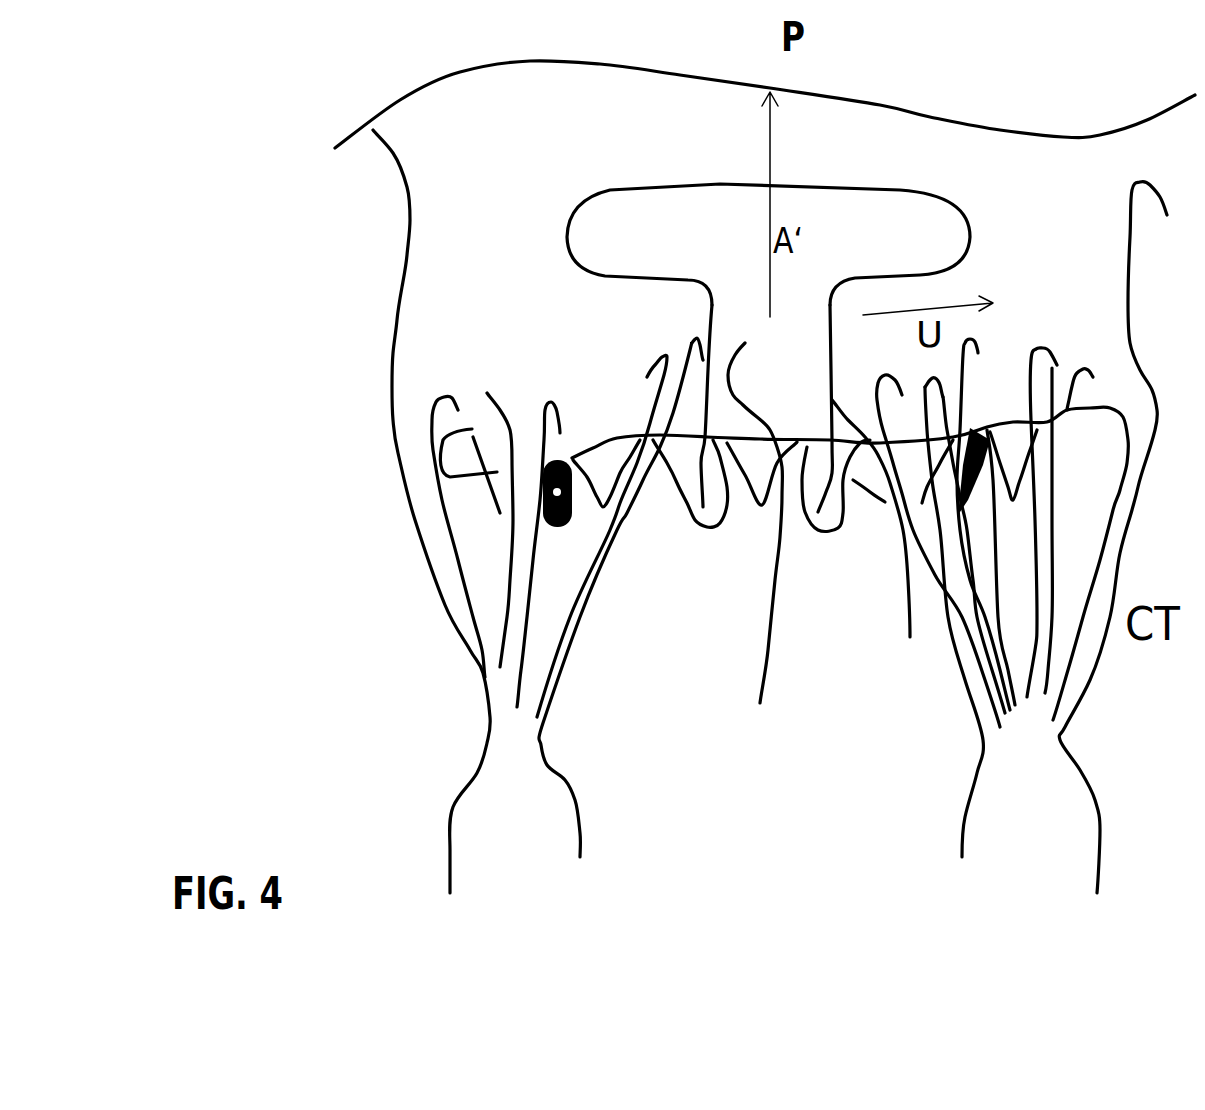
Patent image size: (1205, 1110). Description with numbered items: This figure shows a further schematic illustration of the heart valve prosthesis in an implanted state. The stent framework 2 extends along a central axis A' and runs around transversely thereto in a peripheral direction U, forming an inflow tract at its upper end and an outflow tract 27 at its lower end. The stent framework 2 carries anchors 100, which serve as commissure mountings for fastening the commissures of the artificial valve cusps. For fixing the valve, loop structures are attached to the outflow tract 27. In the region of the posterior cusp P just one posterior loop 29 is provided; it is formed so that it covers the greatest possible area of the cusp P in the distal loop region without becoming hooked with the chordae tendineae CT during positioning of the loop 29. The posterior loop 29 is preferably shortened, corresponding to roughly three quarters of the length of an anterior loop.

The stent framework 2 is at (663, 463).
The outflow tract 27 is at (876, 544).
The posterior loop 29 is at (759, 551).
The anchor 100 is at (548, 540).